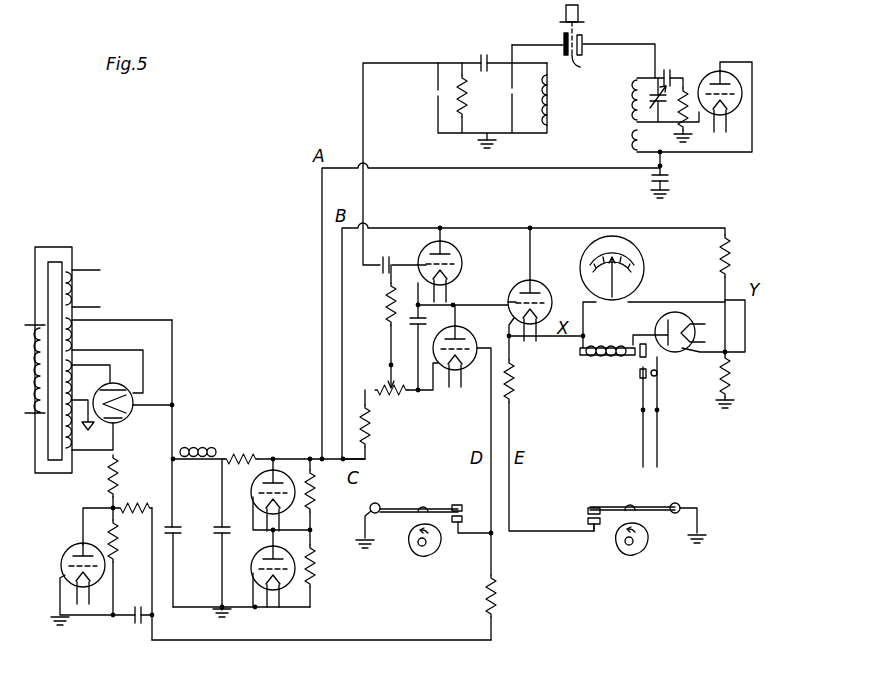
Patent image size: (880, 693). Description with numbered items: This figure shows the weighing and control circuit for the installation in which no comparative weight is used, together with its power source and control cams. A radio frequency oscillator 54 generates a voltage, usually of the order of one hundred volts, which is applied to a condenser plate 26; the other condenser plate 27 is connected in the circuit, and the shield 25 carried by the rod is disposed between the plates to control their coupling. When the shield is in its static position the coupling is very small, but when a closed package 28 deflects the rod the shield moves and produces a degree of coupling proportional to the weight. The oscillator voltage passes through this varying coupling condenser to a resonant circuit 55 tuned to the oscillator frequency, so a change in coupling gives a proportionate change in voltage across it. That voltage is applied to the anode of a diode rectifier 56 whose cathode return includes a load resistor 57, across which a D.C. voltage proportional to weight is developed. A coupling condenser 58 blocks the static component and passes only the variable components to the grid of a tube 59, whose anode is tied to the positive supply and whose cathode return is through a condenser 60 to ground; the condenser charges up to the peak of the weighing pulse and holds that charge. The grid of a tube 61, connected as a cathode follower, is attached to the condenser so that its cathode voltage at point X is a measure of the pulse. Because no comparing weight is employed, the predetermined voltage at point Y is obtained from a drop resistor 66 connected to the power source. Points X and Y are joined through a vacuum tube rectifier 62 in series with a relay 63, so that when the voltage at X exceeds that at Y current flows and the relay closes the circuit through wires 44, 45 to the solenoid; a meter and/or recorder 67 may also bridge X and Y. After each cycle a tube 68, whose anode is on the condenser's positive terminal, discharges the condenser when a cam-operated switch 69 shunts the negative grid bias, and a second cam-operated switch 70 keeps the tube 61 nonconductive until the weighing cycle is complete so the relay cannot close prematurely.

The shield 25 is at (587, 54).
The condenser plate 26 is at (584, 42).
The condenser plate 27 is at (565, 40).
The closed package 28 is at (580, 16).
The wire 44 is at (640, 438).
The wire 45 is at (660, 438).
The radio frequency oscillator 54 is at (715, 164).
The resonant circuit 55 is at (557, 117).
The diode rectifier 56 is at (483, 57).
The load resistor 57 is at (476, 97).
The coupling condenser 58 is at (380, 260).
The tube 59 is at (462, 256).
The condenser 60 is at (410, 330).
The tube 61 is at (546, 291).
The vacuum tube rectifier 62 is at (678, 354).
The relay 63 is at (608, 343).
The drop resistor 66 is at (740, 257).
The meter and/or recorder 67 is at (630, 256).
The tube 68 is at (471, 339).
The cam-operated switch 69 is at (456, 505).
The second cam-operated switch 70 is at (629, 503).